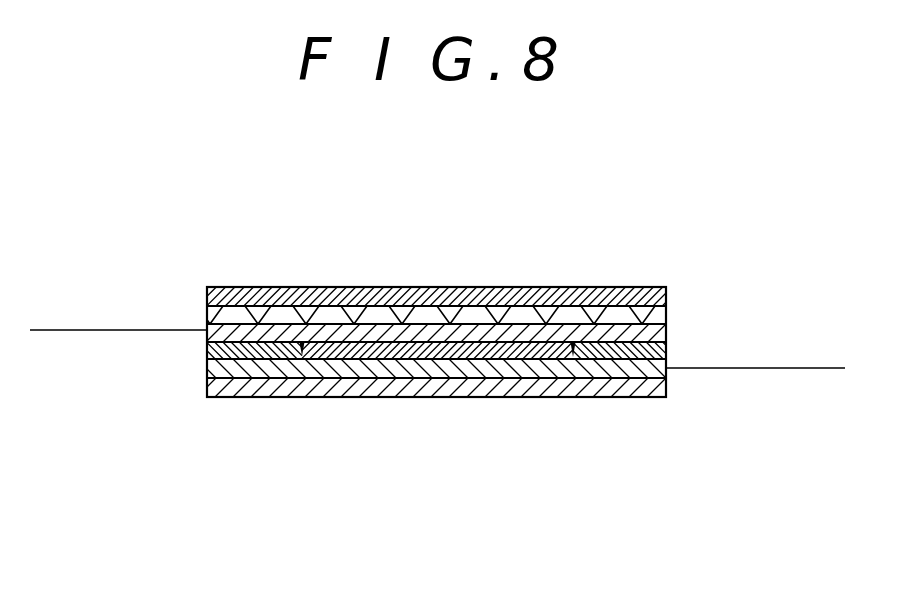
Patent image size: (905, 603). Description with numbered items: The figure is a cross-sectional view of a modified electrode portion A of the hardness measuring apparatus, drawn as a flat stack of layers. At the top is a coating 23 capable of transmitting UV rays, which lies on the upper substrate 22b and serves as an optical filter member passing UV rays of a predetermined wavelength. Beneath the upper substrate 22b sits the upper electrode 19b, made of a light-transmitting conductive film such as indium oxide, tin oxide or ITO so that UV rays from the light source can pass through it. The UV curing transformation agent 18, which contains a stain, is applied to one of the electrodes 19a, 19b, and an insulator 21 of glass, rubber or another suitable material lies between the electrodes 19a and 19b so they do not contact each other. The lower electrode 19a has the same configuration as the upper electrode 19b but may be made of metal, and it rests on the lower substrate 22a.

The electrode portion A is at (202, 262).
The UV curing transformation agent 18 is at (455, 340).
The lower electrode 19a is at (207, 372).
The upper electrode 19b is at (667, 328).
The insulator 21 is at (272, 343).
The lower substrate 22a is at (667, 390).
The upper substrate 22b is at (557, 313).
The coating 23 is at (353, 290).